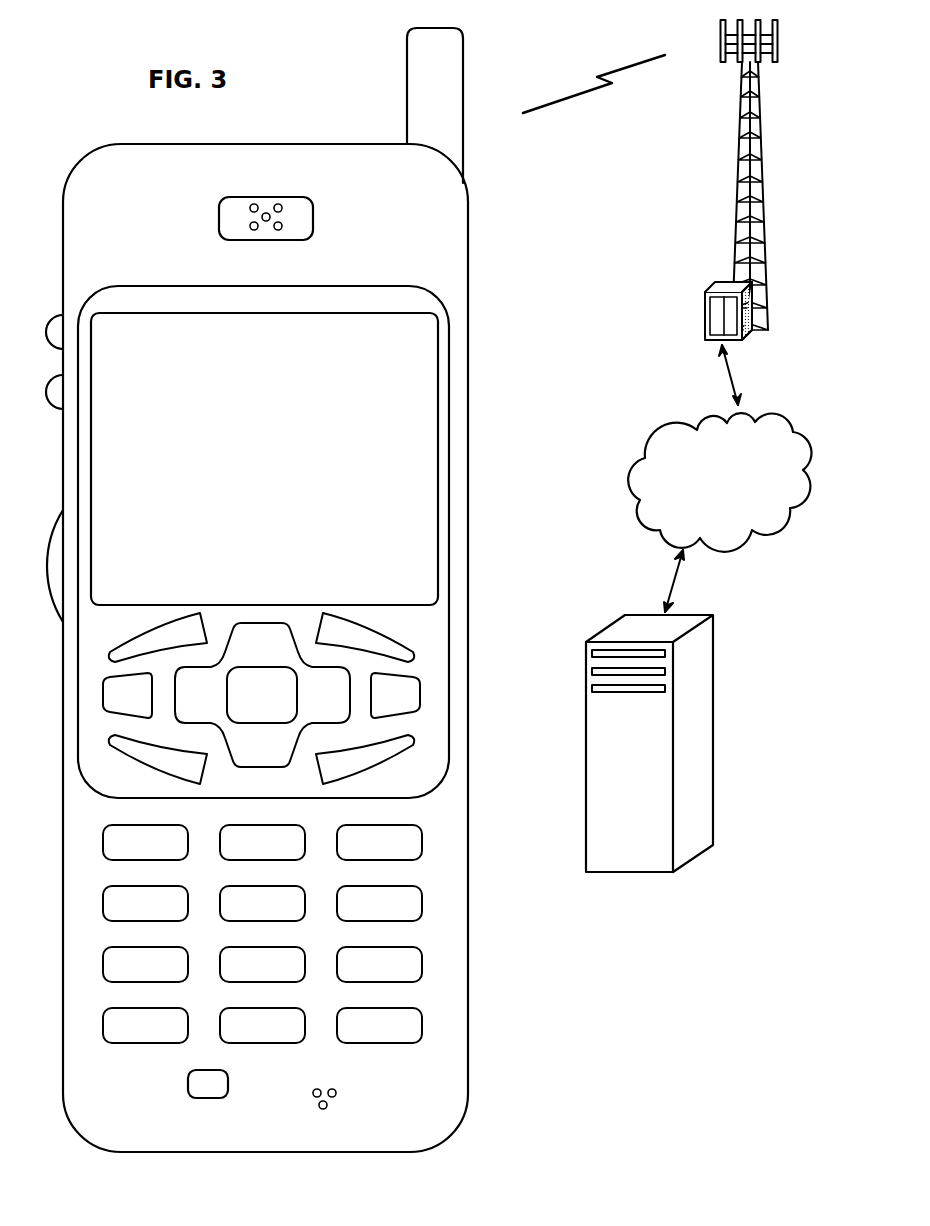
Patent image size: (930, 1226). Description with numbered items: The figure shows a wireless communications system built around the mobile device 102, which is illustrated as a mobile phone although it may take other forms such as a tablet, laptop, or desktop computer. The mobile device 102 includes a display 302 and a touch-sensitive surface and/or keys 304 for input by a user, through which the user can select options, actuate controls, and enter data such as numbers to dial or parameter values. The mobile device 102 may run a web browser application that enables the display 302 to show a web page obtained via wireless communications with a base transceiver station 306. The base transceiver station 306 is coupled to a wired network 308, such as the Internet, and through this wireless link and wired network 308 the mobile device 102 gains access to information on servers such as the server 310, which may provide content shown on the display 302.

The mobile device 102 is at (106, 1150).
The display 302 is at (435, 326).
The keys 304 is at (477, 1061).
The base transceiver station 306 is at (735, 192).
The wired network 308 is at (650, 528).
The server 310 is at (628, 873).